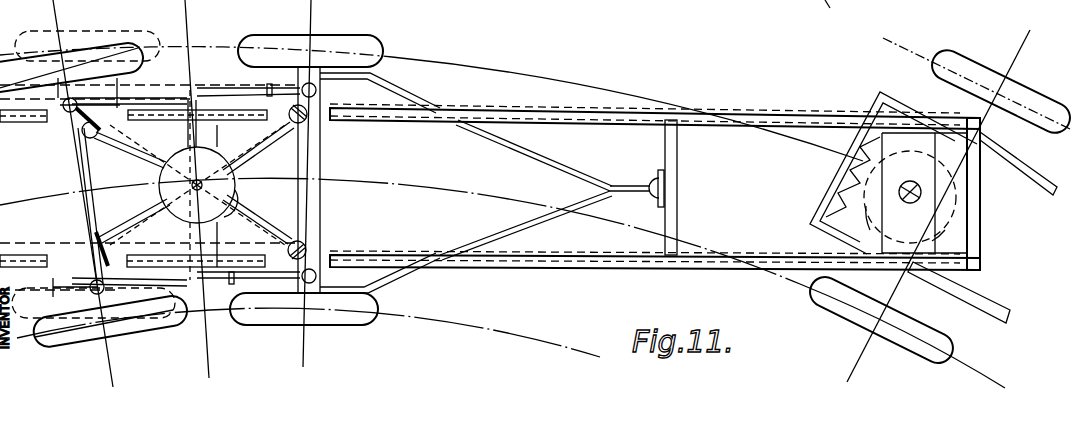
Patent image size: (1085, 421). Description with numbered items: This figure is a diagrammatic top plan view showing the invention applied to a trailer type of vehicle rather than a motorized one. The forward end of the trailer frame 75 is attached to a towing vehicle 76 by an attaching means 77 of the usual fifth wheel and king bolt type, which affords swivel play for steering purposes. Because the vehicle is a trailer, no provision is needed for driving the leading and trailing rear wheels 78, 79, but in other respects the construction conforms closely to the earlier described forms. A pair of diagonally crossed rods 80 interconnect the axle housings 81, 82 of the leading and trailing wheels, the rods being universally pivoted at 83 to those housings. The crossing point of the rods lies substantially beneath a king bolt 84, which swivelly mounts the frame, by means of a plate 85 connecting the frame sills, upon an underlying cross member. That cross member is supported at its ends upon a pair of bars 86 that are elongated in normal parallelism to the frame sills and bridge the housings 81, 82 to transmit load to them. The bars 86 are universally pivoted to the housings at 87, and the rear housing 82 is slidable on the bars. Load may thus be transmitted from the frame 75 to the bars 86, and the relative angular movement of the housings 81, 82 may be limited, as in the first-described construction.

The frame 75 is at (713, 126).
The towing vehicle 76 is at (893, 90).
The attaching means 77 is at (914, 181).
The leading rear wheel 78 is at (356, 41).
The trailing rear wheel 79 is at (127, 46).
The diagonally crossed rods 80 is at (238, 169).
The axle housing 81 is at (321, 154).
The axle housing 82 is at (72, 153).
The universal pivot 83 is at (97, 149).
The king bolt 84 is at (219, 219).
The plate 85 is at (187, 133).
The bars 86 is at (270, 82).
The universal pivot 87 is at (320, 91).